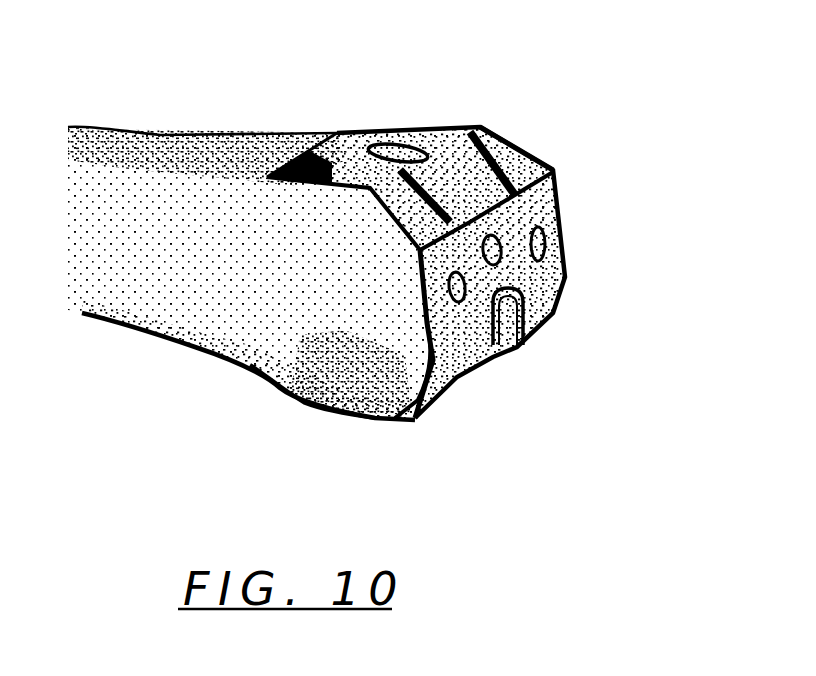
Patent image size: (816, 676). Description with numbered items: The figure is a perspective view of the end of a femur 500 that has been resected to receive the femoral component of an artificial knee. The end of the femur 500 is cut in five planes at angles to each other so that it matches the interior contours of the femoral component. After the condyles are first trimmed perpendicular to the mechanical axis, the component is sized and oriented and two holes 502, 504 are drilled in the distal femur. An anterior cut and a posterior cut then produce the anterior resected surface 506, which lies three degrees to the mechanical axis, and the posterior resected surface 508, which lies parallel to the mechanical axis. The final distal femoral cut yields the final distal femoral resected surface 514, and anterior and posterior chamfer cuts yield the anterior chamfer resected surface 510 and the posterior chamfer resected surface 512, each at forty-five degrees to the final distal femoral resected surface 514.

The femur 500 is at (215, 98).
The hole 502 is at (540, 238).
The hole 504 is at (383, 417).
The anterior resected surface 506 is at (373, 130).
The posterior resected surface 508 is at (337, 408).
The anterior chamfer resected surface 510 is at (490, 128).
The posterior chamfer resected surface 512 is at (483, 373).
The final distal femoral resected surface 514 is at (513, 278).